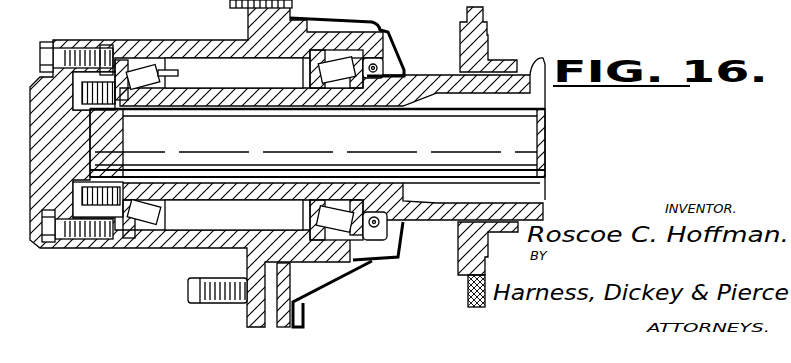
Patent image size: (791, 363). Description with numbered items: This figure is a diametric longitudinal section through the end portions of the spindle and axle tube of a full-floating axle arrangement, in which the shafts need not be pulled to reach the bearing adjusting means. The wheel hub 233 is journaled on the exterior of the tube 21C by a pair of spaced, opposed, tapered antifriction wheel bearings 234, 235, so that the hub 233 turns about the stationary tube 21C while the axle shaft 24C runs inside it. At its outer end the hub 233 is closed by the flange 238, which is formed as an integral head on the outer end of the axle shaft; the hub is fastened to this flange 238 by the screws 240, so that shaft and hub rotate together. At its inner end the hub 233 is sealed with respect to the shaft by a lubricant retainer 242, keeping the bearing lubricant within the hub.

The axle shaft 24C is at (427, 149).
The tube 21C is at (531, 62).
The wheel hub 233 is at (172, 249).
The tapered antifriction wheel bearing 234 is at (331, 85).
The tapered antifriction wheel bearing 235 is at (143, 64).
The flange 238 is at (58, 44).
The screws 240 is at (47, 244).
The lubricant retainer 242 is at (380, 60).